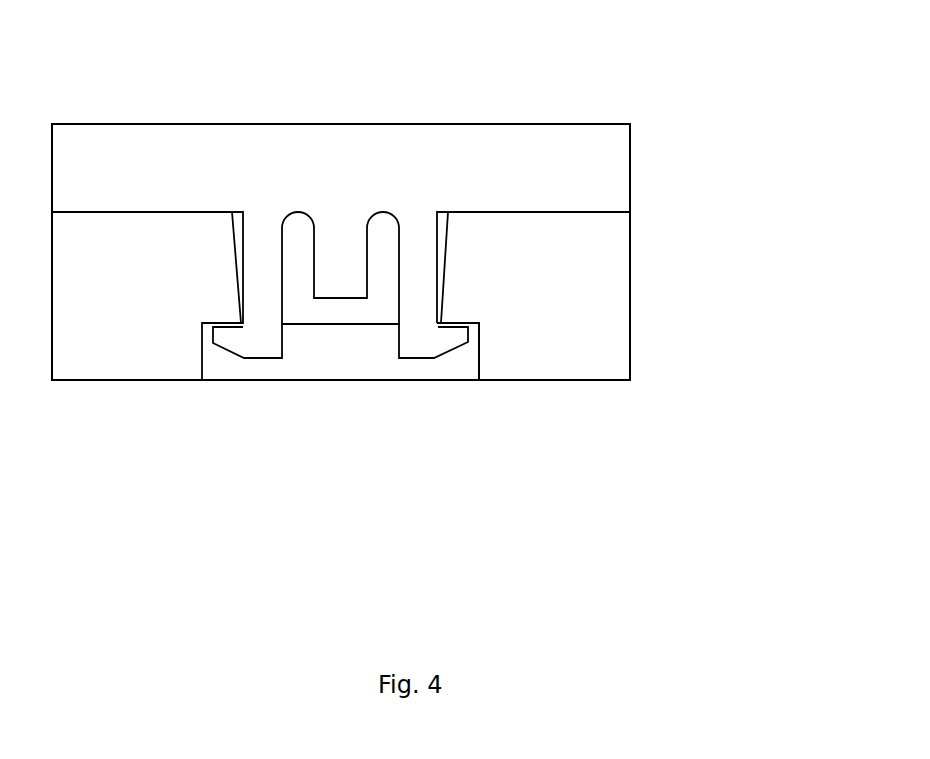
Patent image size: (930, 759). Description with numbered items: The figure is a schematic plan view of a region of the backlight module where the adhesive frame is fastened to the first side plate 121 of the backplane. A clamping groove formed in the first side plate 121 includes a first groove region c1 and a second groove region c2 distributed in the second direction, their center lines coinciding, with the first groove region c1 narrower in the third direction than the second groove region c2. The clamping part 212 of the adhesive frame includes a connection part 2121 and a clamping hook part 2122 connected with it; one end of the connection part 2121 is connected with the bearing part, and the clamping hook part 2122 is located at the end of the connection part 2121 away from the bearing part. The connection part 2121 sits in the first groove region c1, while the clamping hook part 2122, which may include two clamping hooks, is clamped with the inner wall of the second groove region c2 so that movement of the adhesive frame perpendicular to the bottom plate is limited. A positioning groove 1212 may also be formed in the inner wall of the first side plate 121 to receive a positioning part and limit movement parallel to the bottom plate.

The clamping part 212 is at (480, 146).
The connection part 2121 is at (273, 283).
The clamping hook part 2122 is at (260, 342).
The first side plate 121 is at (567, 273).
The positioning groove 1212 is at (499, 517).
The first groove region c1 is at (333, 310).
The second groove region c2 is at (430, 372).